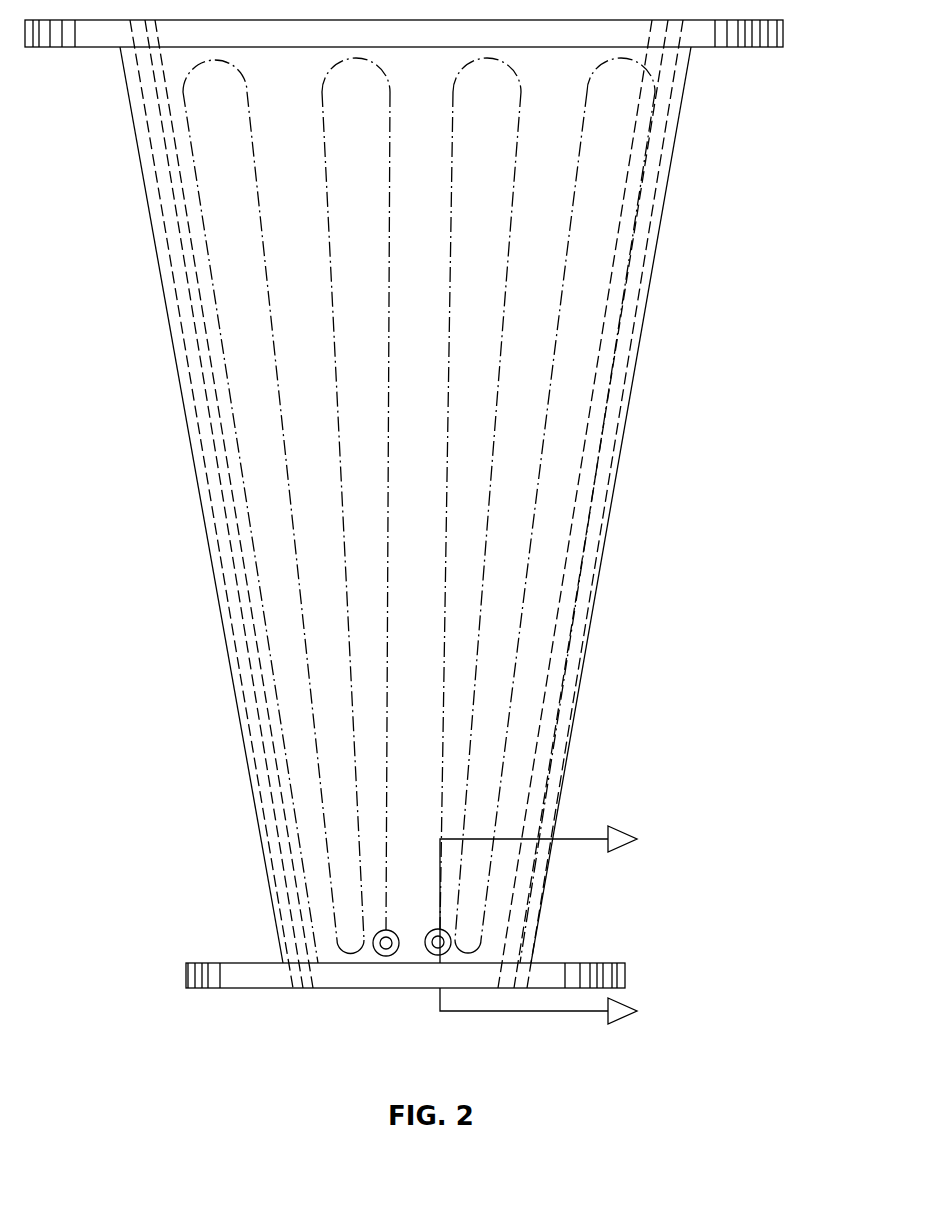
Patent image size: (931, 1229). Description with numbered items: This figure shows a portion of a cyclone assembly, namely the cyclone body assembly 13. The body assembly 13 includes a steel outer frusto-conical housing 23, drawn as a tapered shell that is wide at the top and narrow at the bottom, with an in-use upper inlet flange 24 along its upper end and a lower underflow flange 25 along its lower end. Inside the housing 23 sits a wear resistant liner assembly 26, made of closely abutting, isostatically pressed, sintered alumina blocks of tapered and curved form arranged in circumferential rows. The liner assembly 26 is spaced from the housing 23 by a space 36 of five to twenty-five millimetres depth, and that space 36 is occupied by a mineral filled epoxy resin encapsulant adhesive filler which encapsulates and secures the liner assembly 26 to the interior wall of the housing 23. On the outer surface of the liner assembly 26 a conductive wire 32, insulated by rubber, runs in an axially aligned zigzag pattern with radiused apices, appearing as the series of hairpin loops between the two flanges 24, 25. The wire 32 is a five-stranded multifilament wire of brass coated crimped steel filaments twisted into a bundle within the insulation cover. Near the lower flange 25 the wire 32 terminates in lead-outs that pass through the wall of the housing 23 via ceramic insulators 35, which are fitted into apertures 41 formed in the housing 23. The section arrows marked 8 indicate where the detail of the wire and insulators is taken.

The section line 8- 8 is at (553, 925).
The cyclone body assembly 13 is at (638, 343).
The outer frusto-conical housing 23 is at (653, 212).
The upper inlet flange 24 is at (745, 47).
The lower underflow flange 25 is at (626, 969).
The wear resistant liner assembly 26 is at (557, 645).
The conductive wire insulated by rubber 32 is at (495, 413).
The ceramic insulators 35 is at (382, 955).
The space 36 is at (562, 727).
The apertures 41 is at (392, 930).